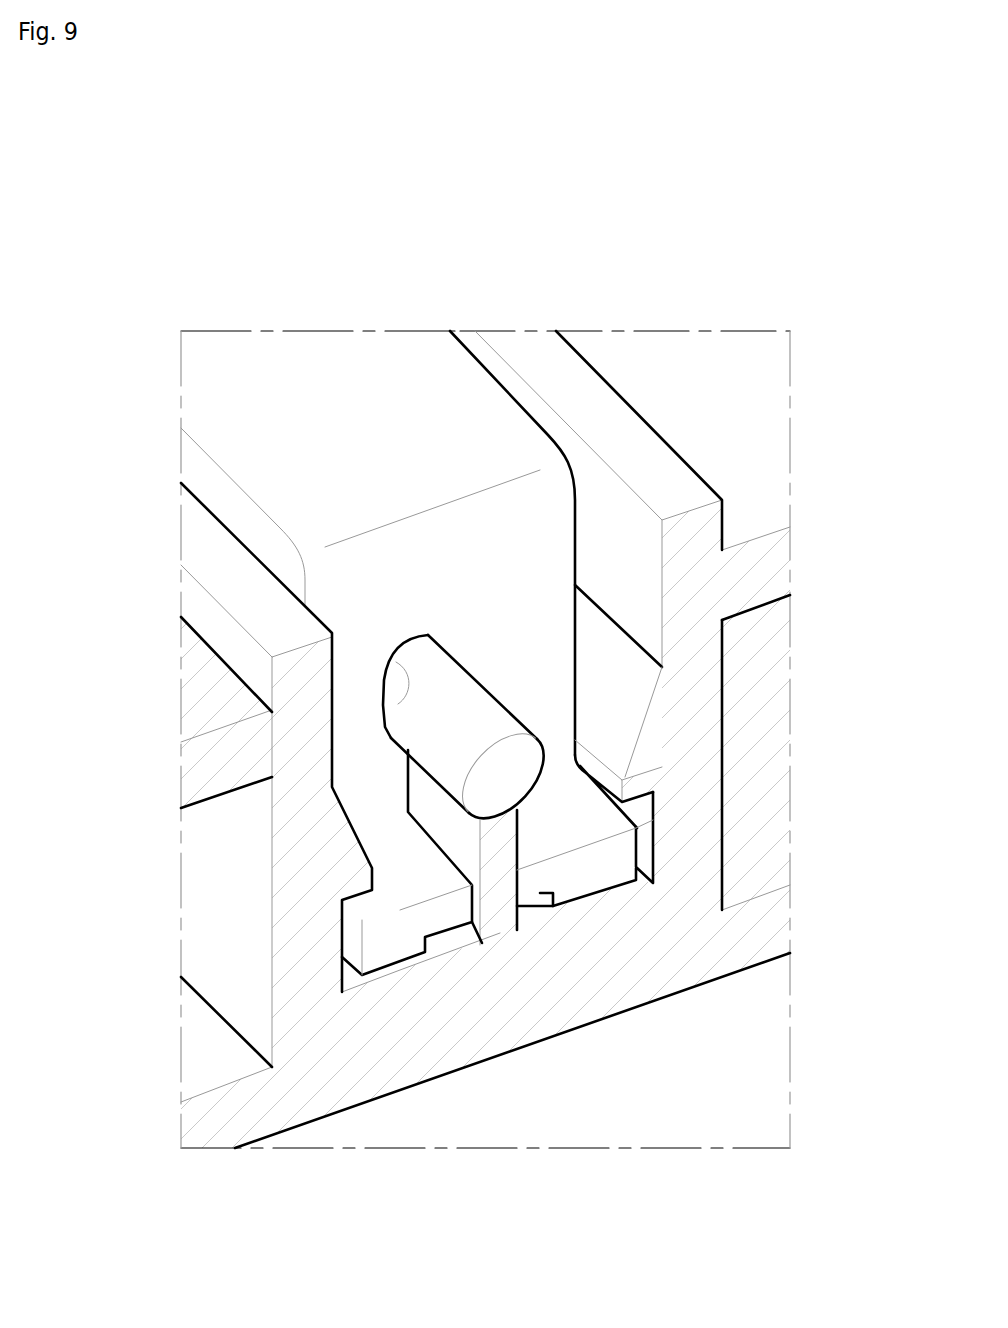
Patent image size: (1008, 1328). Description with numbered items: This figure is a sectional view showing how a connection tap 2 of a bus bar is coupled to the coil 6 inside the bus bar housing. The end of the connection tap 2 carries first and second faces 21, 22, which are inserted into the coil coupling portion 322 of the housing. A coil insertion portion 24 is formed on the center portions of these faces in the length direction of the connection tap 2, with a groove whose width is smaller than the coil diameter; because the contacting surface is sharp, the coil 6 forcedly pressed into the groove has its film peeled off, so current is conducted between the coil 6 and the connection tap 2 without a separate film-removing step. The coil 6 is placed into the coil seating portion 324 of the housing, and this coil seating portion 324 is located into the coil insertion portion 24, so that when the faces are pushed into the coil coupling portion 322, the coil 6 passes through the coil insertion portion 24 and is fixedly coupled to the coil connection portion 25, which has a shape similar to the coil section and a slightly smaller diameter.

The connection tap 2 is at (325, 358).
The first face 21 is at (530, 555).
The coil 6 is at (462, 697).
The coil connection portion 25 is at (383, 703).
The coil coupling portion 322 is at (630, 685).
The second face 22 is at (613, 857).
The coil insertion portion 24 is at (525, 890).
The coil seating portion 324 is at (497, 913).